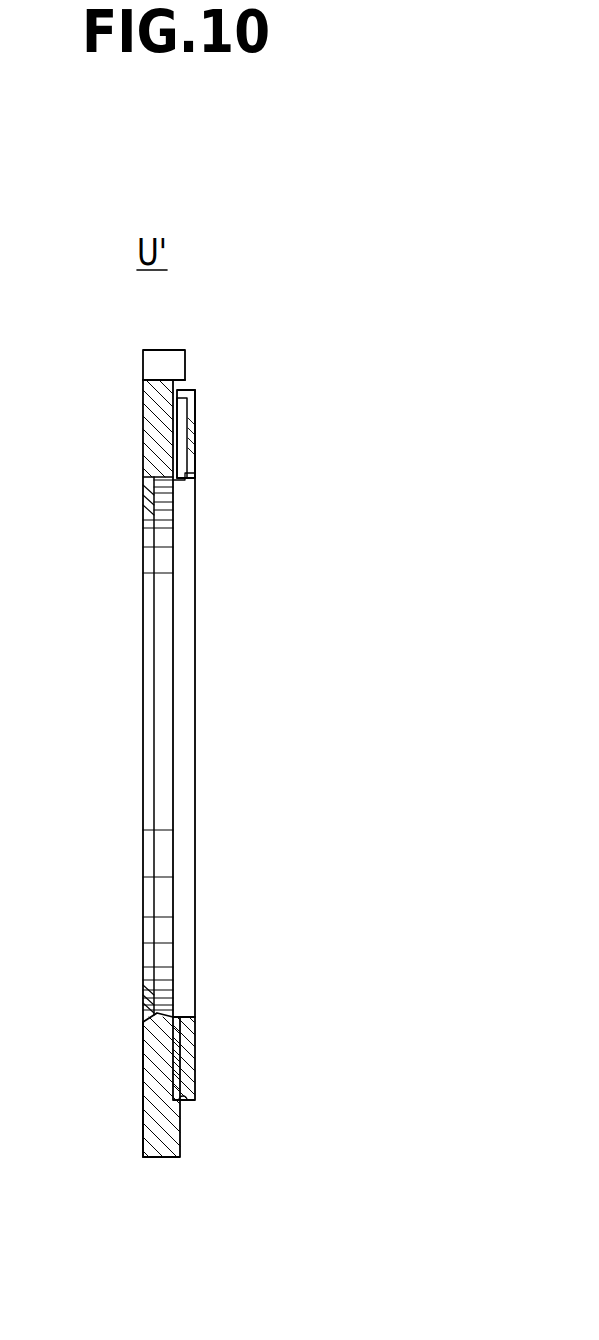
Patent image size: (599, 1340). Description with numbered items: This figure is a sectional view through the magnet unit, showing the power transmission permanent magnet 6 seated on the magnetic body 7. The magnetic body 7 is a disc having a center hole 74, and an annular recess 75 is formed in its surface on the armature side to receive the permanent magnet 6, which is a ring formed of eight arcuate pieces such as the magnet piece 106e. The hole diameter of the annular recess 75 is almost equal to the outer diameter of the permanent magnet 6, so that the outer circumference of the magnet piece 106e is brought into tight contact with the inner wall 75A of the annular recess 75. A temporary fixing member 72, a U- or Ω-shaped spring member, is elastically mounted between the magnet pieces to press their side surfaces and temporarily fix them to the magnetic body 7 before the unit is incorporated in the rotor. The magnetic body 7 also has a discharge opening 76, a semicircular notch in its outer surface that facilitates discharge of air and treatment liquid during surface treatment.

The discharge opening 76 is at (166, 352).
The magnetic body 7 is at (114, 1118).
The center hole 74 is at (165, 1008).
The power transmission permanent magnet 6 is at (226, 1034).
The temporary fixing member 72 is at (188, 420).
The annular recess 75 is at (192, 1074).
The magnet piece 106e is at (188, 1103).
The inner wall of annular recess 75A is at (187, 1104).